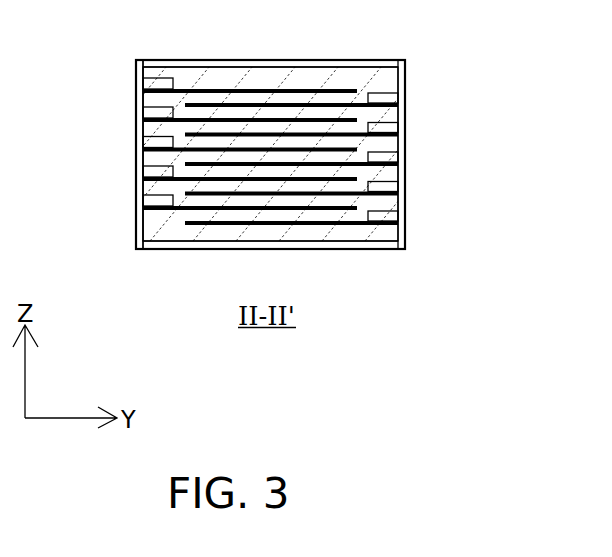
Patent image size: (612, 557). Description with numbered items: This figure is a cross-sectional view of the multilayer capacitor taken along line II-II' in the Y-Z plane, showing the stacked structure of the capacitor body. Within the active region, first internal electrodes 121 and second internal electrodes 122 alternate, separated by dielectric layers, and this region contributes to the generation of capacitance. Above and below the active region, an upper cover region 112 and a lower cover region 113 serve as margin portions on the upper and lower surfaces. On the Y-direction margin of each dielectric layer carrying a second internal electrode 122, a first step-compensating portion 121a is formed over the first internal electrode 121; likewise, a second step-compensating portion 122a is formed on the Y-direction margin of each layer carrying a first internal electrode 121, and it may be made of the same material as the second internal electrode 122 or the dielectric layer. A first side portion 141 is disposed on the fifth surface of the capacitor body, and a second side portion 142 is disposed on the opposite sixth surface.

The upper cover region 112 is at (258, 78).
The lower cover region 113 is at (348, 235).
The first internal electrode 121 is at (207, 102).
The first step-compensating portion 121a is at (386, 95).
The second internal electrode 122 is at (320, 117).
The second step-compensating portion 122a is at (160, 78).
The first side portion 141 is at (405, 148).
The second side portion 142 is at (138, 108).